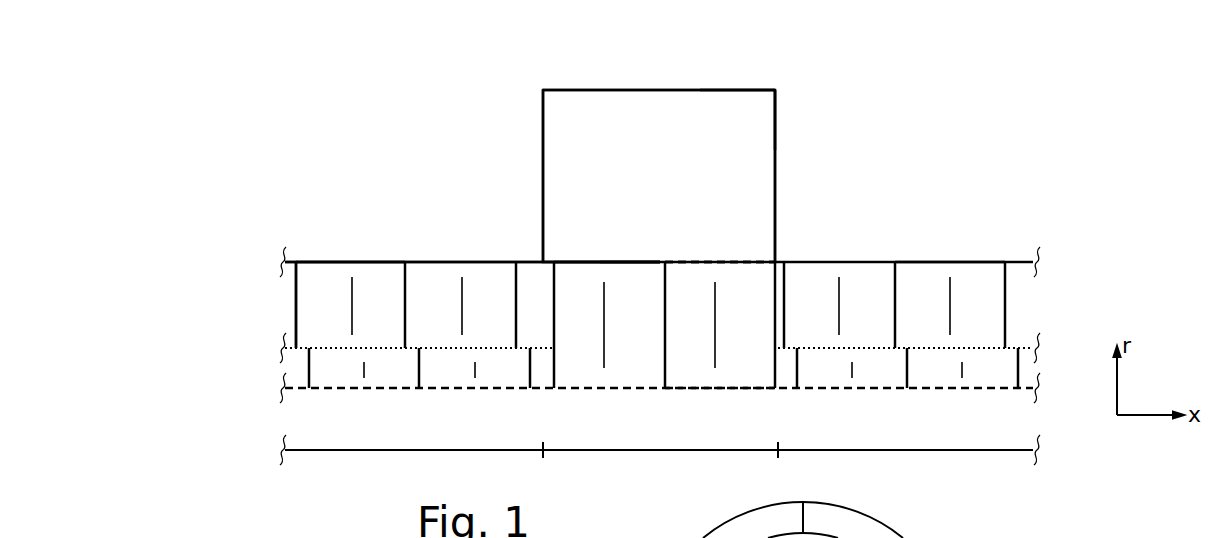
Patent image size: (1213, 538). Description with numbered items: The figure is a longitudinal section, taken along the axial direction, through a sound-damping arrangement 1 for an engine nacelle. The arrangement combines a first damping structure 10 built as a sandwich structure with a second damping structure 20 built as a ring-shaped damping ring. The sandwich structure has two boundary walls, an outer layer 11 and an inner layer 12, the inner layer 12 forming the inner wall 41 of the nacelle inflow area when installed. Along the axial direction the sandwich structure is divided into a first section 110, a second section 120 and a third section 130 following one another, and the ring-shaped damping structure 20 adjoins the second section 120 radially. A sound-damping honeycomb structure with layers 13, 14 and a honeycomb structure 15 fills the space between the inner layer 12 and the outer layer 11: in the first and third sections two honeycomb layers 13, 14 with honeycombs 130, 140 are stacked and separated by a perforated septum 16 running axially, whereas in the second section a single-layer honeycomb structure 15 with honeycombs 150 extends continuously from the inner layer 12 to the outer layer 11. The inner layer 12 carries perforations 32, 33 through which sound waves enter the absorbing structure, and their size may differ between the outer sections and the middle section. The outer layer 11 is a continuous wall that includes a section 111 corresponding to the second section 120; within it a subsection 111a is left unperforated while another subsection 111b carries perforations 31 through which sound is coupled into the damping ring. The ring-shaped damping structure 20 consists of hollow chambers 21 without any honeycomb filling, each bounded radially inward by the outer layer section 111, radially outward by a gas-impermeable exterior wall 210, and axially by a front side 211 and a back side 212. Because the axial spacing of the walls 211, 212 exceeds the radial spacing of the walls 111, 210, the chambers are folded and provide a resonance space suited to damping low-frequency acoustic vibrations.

The sound-damping arrangement 1 is at (955, 168).
The first damping structure 10 is at (466, 235).
The outer layer 11 is at (380, 262).
The inner layer 12 is at (435, 387).
The honeycomb layer 13 is at (272, 294).
The honeycomb layer 14 is at (272, 369).
The honeycomb structure 15 is at (700, 400).
The perforated septum 16 is at (988, 347).
The second damping structure 20 is at (565, 77).
The hollow chamber 21 is at (743, 103).
The perforations 31 is at (705, 263).
The perforations 32 is at (500, 385).
The perforations 33 is at (627, 382).
The inner wall 41 is at (977, 390).
The first section 110 is at (414, 466).
The section of the outer layer 111 is at (590, 262).
The subsection 111a is at (631, 250).
The subsection 111b is at (716, 248).
The second section 120 is at (660, 466).
The third section 130 is at (318, 275).
The honeycombs 140 is at (342, 375).
The honeycombs 150 is at (758, 273).
The exterior wall 210 is at (658, 90).
The front side 211 is at (543, 132).
The back side 212 is at (776, 115).